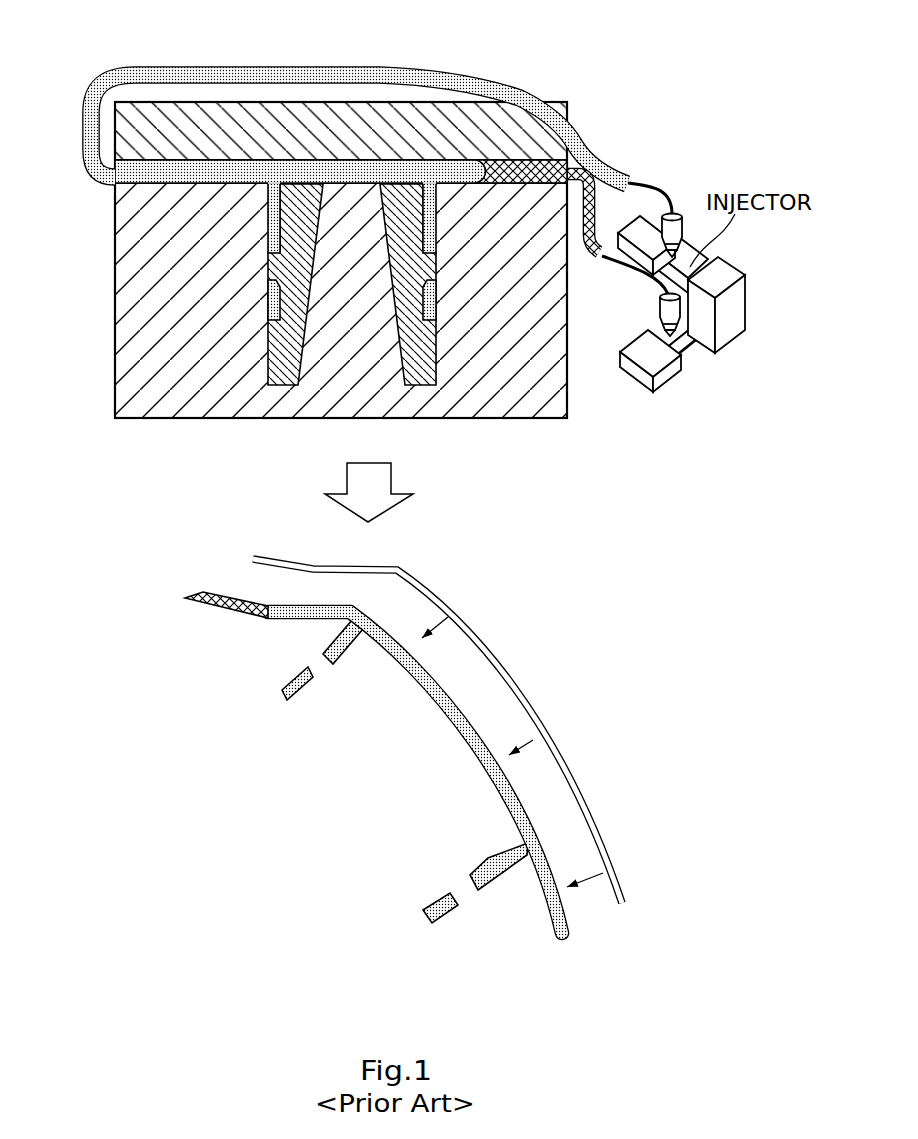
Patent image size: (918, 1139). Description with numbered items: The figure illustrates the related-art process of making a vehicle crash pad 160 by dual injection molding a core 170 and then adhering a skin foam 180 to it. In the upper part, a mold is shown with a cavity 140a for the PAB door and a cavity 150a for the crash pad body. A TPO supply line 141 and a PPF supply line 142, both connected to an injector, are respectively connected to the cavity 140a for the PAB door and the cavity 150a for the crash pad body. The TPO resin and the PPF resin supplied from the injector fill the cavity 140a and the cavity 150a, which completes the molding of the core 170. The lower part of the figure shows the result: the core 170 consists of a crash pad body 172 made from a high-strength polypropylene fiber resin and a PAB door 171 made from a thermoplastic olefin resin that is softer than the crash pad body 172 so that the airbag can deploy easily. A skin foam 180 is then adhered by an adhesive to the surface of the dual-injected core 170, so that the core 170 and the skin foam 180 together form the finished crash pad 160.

The cavity for the PAB door 140a is at (273, 172).
The cavity for the crash pad body 150a is at (522, 173).
The TPO supply line 141 is at (594, 150).
The PPF supply line 142 is at (595, 230).
The crash pad 160 is at (507, 613).
The skin foam 180 is at (525, 677).
The core 170 is at (308, 747).
The PAB door 171 is at (410, 670).
The crash pad body 172 is at (229, 613).